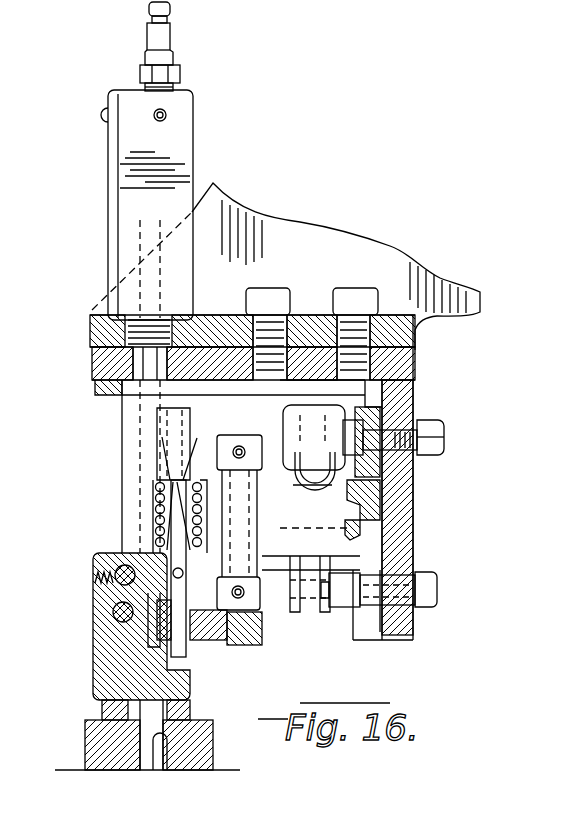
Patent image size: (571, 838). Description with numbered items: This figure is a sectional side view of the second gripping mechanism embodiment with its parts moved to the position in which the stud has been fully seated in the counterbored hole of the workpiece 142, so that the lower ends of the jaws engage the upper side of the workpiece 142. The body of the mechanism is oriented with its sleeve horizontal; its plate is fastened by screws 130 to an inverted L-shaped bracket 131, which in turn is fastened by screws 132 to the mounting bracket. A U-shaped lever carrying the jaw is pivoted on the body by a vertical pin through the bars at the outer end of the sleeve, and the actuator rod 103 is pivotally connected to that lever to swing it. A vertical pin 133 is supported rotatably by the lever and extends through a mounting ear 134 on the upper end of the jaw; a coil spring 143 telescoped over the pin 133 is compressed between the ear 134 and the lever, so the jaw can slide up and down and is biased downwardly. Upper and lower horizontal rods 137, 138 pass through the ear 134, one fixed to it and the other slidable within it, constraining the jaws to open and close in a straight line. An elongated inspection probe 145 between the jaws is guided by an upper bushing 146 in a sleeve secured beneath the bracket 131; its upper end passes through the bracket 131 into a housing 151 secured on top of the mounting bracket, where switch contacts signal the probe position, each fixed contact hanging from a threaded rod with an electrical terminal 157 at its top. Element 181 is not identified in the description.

The electrical terminal 157 is at (166, 36).
The housing 151 is at (185, 160).
The screws 132 is at (298, 298).
The inspection probe 145 is at (95, 345).
The upper bushing 146 is at (112, 392).
The inverted L-shaped bracket 131 is at (413, 405).
The screws 130 is at (430, 455).
The rod 103 is at (300, 480).
The vertical pin 133 is at (156, 498).
The coil spring 143 is at (158, 538).
The mounting ear 134 is at (105, 657).
The upper horizontal rod 137 is at (123, 587).
The lower horizontal rod 138 is at (117, 627).
The workpiece 142 is at (86, 722).
The pin 181 is at (153, 740).